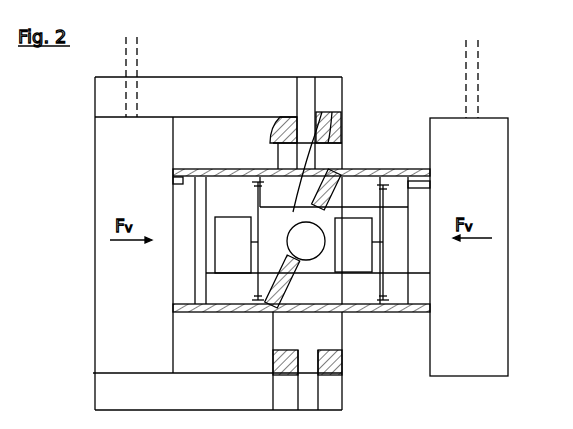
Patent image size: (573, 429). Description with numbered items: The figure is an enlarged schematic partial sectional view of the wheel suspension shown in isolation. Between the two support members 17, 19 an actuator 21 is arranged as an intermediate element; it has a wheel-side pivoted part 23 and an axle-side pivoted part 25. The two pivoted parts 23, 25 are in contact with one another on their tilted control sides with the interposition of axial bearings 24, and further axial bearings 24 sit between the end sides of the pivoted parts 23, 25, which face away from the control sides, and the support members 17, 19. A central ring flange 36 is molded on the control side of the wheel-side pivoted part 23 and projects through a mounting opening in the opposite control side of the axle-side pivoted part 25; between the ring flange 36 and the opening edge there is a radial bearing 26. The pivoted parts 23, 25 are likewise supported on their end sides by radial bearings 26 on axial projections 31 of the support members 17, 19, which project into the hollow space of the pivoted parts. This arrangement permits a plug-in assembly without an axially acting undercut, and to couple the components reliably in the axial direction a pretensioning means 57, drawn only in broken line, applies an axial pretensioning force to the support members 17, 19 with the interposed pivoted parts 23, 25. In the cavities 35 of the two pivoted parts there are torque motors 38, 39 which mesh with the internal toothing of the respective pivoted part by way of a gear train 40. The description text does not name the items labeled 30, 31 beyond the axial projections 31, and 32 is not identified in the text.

The support member 17 is at (147, 343).
The support member 19 is at (479, 344).
The actuator 21 is at (306, 70).
The wheel-side pivoted part 23 is at (231, 169).
The axial bearing 24 is at (174, 169).
The axle-side pivoted part 25 is at (385, 169).
The radial bearing 26 is at (177, 169).
The bearing / support 30 is at (168, 182).
The axial projection 31 is at (416, 276).
The intermediate wall 32 is at (197, 169).
The cavity 35 is at (243, 313).
The central ring flange 36 is at (301, 162).
The torque motor 38 is at (244, 268).
The torque motor 39 is at (366, 245).
The gear train 40 is at (258, 178).
The pretensioning means 57 is at (139, 44).